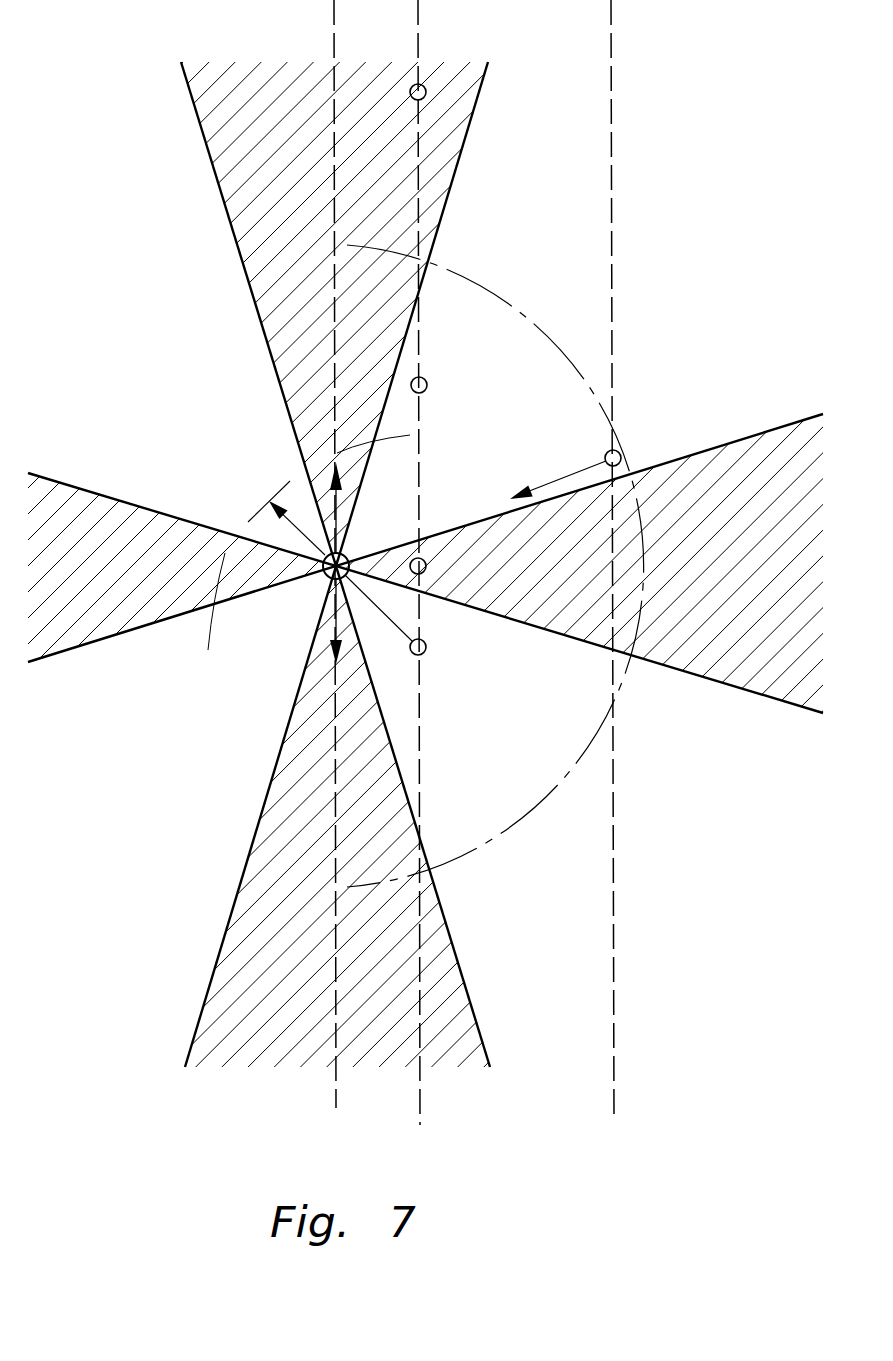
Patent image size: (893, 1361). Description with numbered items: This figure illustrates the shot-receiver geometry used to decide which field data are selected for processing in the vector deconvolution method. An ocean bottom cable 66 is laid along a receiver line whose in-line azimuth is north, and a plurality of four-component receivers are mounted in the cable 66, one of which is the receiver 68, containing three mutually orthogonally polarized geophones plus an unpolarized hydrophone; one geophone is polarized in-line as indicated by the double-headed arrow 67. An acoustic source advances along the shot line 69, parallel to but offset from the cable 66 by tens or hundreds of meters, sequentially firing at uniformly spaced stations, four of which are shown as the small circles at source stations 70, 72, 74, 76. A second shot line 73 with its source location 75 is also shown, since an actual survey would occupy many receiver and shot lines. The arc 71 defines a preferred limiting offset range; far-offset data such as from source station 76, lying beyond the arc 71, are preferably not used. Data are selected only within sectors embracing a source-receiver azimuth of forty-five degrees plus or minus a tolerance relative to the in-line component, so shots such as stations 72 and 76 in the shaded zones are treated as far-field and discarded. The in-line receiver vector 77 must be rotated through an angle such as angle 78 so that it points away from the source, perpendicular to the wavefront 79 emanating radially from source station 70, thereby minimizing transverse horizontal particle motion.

The ocean bottom cable 66 is at (334, 30).
The shot line 69 is at (420, 758).
The second shot line 73 is at (612, 172).
The arc 71 is at (484, 283).
The receiver 68 is at (318, 580).
The double-headed arrow 67 is at (337, 632).
The in-line receiver vector 77 is at (302, 530).
The wavefront 79 is at (253, 517).
The angle 78 is at (412, 613).
The source station 76 is at (426, 92).
The source station 74 is at (428, 385).
The source location 75 is at (608, 452).
The source station 72 is at (412, 560).
The source station 70 is at (425, 653).